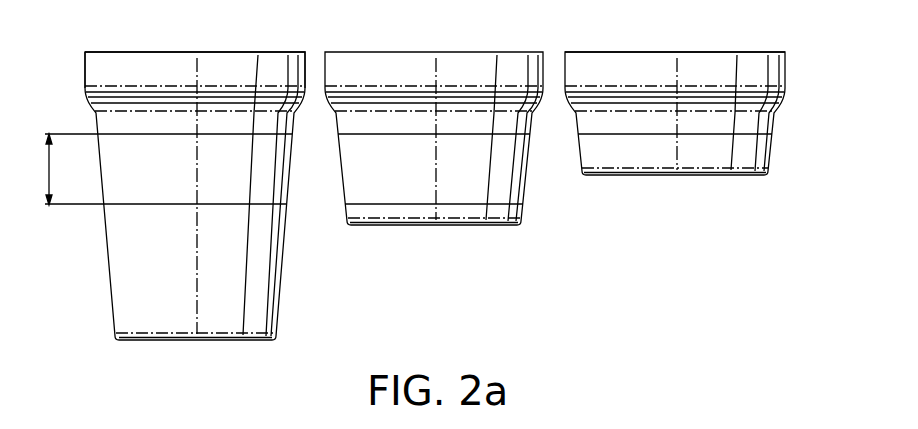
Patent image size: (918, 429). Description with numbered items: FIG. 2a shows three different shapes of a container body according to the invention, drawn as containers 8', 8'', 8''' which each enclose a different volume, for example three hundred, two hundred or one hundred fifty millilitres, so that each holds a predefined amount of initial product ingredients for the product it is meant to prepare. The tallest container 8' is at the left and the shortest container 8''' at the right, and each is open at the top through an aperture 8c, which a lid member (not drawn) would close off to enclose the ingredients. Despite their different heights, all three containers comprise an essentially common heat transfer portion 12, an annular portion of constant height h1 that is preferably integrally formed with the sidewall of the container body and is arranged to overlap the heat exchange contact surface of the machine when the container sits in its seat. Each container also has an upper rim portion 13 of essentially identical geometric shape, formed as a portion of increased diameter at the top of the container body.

The container 8' is at (170, 220).
The container 8'' is at (434, 163).
The container 8''' is at (675, 115).
The aperture 8c is at (708, 52).
The heat transfer portion 12 is at (382, 193).
The upper rim portion 13 is at (85, 69).
The height of the heat transfer portion h1 is at (35, 169).